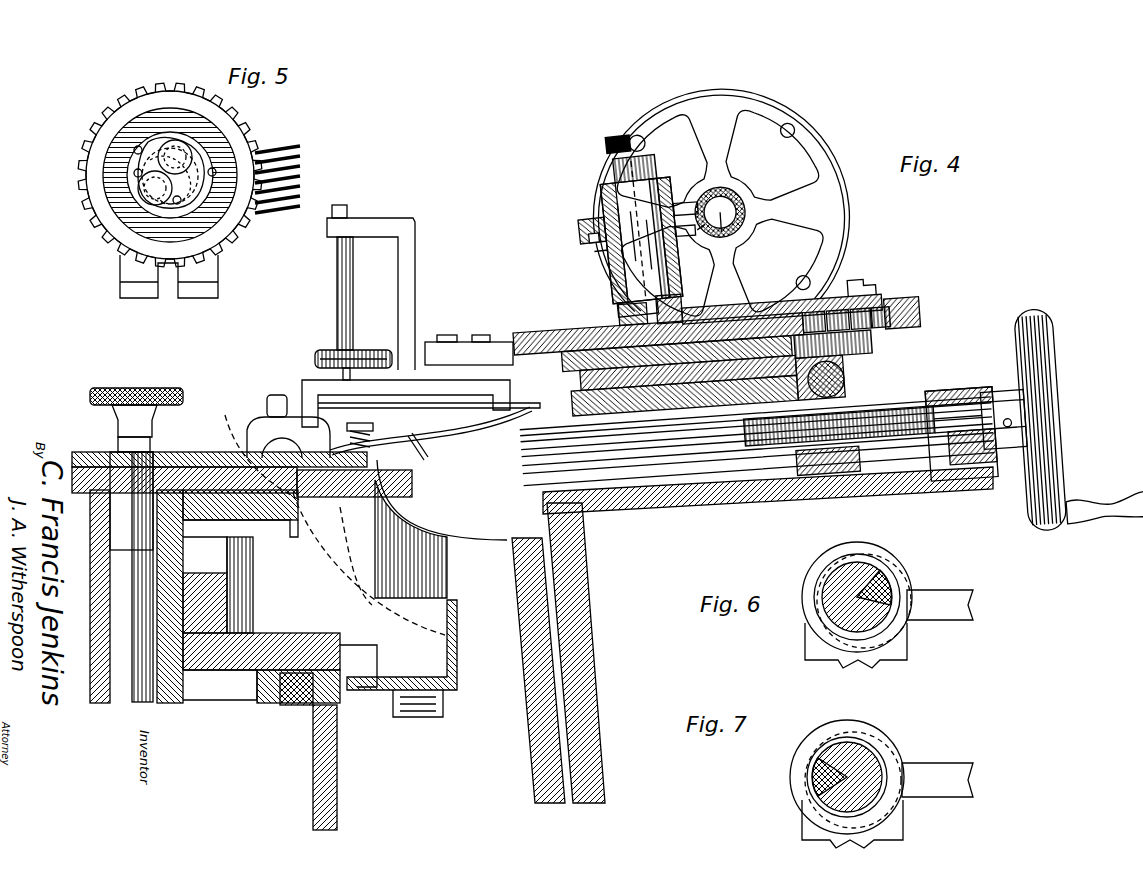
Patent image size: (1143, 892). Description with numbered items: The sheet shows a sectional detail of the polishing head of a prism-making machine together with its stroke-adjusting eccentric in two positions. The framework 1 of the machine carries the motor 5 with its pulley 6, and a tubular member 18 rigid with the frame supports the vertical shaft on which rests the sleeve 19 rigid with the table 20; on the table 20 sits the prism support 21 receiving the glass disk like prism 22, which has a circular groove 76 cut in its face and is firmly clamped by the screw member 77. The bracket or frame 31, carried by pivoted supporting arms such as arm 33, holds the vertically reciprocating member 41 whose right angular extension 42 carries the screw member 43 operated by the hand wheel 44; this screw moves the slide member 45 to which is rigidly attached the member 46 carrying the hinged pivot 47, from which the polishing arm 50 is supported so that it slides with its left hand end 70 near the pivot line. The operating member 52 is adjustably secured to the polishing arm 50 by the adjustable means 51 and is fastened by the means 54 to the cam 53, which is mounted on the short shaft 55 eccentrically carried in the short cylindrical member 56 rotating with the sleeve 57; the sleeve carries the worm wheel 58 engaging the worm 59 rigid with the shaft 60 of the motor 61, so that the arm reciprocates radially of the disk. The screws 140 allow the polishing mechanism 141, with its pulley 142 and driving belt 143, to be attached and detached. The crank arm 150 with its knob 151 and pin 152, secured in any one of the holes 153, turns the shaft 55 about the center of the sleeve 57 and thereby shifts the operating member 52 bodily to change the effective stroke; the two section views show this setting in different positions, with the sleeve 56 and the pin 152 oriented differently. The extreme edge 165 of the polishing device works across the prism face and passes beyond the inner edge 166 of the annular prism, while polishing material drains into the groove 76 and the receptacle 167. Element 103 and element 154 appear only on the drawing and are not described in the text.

In FIG. 4, the framework 1 is at (330, 762).
In FIG. 4, the motor 5 is at (586, 239).
In FIG. 4, the pulley 6 is at (700, 235).
In FIG. 4, the tubular member 18 is at (160, 704).
In FIG. 4, the sleeve 19 is at (192, 575).
In FIG. 4, the table 20 is at (270, 520).
In FIG. 4, the prism support 21 is at (370, 480).
In FIG. 4, the disk like prism 22 is at (192, 452).
In FIG. 4, the bracket or frame 31 is at (540, 703).
In FIG. 4, the supporting arm 33 is at (458, 545).
In FIG. 4, the vertically reciprocating member 41 is at (588, 655).
In FIG. 4, the right angular extension 42 is at (660, 512).
In FIG. 4, the screw member 43 is at (870, 420).
In FIG. 4, the hand wheel 44 is at (1022, 352).
In FIG. 4, the slide member 45 is at (838, 408).
In FIG. 4, the member 46 is at (866, 352).
In FIG. 4, the hinged pivot 47 is at (840, 372).
In FIG. 4, the polishing arm 50 is at (572, 330).
In FIG. 4, the adjustable means 51 is at (898, 322).
In FIG. 4, the operating member 52 is at (860, 302).
In FIG. 6, the operating member 52 is at (946, 590).
In FIG. 7, the operating member 52 is at (946, 775).
In FIG. 4, the cam 53 is at (680, 312).
In FIG. 6, the cam 53 is at (845, 545).
In FIG. 7, the cam 53 is at (800, 755).
In FIG. 4, the means 54 is at (720, 320).
In FIG. 6, the means 54 is at (905, 632).
In FIG. 5, the short shaft 55 is at (184, 152).
In FIG. 4, the short shaft 55 is at (632, 266).
In FIG. 6, the short shaft 55 is at (872, 575).
In FIG. 7, the short shaft 55 is at (820, 776).
In FIG. 5, the short cylindrical member 56 is at (262, 180).
In FIG. 4, the short cylindrical member 56 is at (620, 246).
In FIG. 6, the short cylindrical member 56 is at (824, 590).
In FIG. 7, the short cylindrical member 56 is at (862, 750).
In FIG. 5, the sleeve 57 is at (152, 137).
In FIG. 4, the sleeve 57 is at (602, 200).
In FIG. 6, the sleeve 57 is at (830, 562).
In FIG. 7, the sleeve 57 is at (864, 738).
In FIG. 4, the worm wheel 58 is at (584, 222).
In FIG. 4, the worm 59 is at (748, 213).
In FIG. 4, the shaft 60 is at (722, 205).
In FIG. 4, the motor 61 is at (822, 160).
In FIG. 4, the left hand end 70 is at (500, 350).
In FIG. 4, the circular groove 76 is at (288, 426).
In FIG. 4, the screw member 77 is at (180, 392).
In FIG. 4, the sleeve 103 is at (614, 292).
In FIG. 4, the screws 140 is at (480, 335).
In FIG. 4, the polishing mechanism 141 is at (405, 232).
In FIG. 4, the pulley 142 is at (340, 350).
In FIG. 4, the driving belt 143 is at (320, 356).
In FIG. 5, the crank arm 150 is at (205, 205).
In FIG. 4, the crank arm 150 is at (644, 156).
In FIG. 5, the knob 151 is at (130, 185).
In FIG. 4, the knob 151 is at (624, 138).
In FIG. 5, the pin 152 is at (104, 214).
In FIG. 4, the pin 152 is at (604, 190).
In FIG. 5, the holes 153 is at (202, 222).
In FIG. 7, the dashed circle 154 is at (898, 758).
In FIG. 4, the extreme edge 165 is at (348, 432).
In FIG. 4, the inner edge 166 is at (290, 500).
In FIG. 4, the receptacle 167 is at (457, 660).